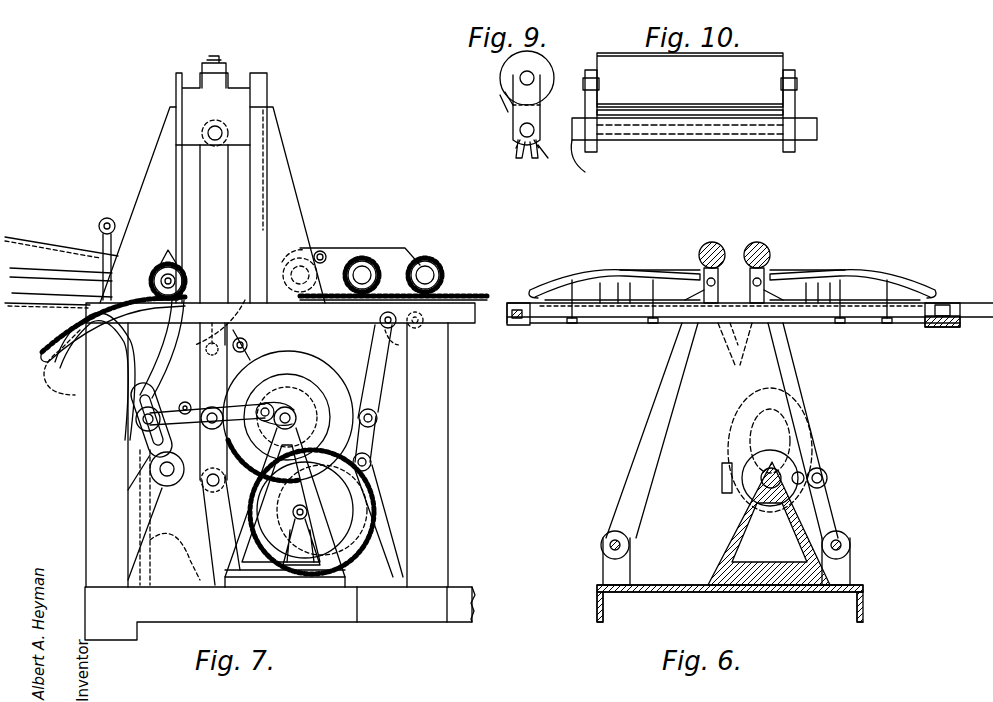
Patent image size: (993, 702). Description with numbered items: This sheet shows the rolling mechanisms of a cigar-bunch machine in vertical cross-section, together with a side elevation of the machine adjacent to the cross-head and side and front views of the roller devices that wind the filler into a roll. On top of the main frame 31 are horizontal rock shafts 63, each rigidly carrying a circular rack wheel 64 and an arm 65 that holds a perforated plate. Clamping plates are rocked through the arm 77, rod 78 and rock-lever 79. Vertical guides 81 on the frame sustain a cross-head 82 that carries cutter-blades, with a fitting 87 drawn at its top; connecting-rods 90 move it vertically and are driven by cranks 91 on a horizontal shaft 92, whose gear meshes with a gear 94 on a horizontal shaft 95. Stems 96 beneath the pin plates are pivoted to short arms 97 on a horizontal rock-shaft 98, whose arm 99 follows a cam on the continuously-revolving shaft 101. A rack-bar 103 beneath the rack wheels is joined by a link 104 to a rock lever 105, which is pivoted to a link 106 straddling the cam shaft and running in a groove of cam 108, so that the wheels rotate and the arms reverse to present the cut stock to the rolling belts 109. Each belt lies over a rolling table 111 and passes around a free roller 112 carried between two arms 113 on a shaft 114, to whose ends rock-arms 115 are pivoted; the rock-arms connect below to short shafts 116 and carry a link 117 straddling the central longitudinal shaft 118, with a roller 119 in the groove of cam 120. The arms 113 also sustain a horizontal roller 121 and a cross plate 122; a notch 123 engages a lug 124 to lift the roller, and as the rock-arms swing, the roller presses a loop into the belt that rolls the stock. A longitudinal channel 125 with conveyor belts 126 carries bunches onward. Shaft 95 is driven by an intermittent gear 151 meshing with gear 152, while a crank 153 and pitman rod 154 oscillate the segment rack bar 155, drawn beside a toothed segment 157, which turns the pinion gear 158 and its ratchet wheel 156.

In FIG. 7, the main frame 31 is at (455, 322).
In FIG. 7, the horizontal rock shaft 63 is at (470, 250).
In FIG. 7, the circular rack wheel 64 is at (452, 245).
In FIG. 7, the arm 65 is at (395, 248).
In FIG. 7, the arm 77 is at (112, 220).
In FIG. 7, the rod 78 is at (100, 242).
In FIG. 7, the rock-lever 79 is at (165, 400).
In FIG. 7, the vertical guides 81 is at (287, 157).
In FIG. 7, the cross-head 82 is at (221, 188).
In FIG. 7, the adjusting screw 87 is at (218, 62).
In FIG. 7, the connecting-rods 90 is at (214, 224).
In FIG. 7, the cranks 91 is at (220, 510).
In FIG. 7, the horizontal shaft 92 is at (205, 482).
In FIG. 7, the gear 94 is at (345, 545).
In FIG. 7, the horizontal shaft 95 is at (295, 505).
In FIG. 7, the stems 96 is at (122, 376).
In FIG. 7, the short arms 97 is at (213, 401).
In FIG. 7, the horizontal rock-shaft 98 is at (248, 345).
In FIG. 7, the arm 99 is at (250, 360).
In FIG. 7, the continuously-revolving horizontal shaft 101 is at (320, 395).
In FIG. 7, the rack-bar 103 is at (478, 290).
In FIG. 7, the link 104 is at (396, 330).
In FIG. 7, the rock lever 105 is at (380, 390).
In FIG. 7, the link 106 is at (378, 425).
In FIG. 7, the cam 108 is at (300, 368).
In FIG. 6, the rolling belts 109 is at (905, 285).
In FIG. 6, the rolling table 111 is at (880, 310).
In FIG. 9, the free roller 112 is at (555, 162).
In FIG. 10, the free roller 112 is at (712, 130).
In FIG. 6, the free roller 112 is at (765, 270).
In FIG. 9, the arms 113 is at (540, 110).
In FIG. 10, the arms 113 is at (795, 108).
In FIG. 6, the arms 113 is at (742, 268).
In FIG. 9, the shaft 114 is at (572, 135).
In FIG. 10, the shaft 114 is at (805, 140).
In FIG. 6, the rock-arms 115 is at (778, 350).
In FIG. 6, the short shafts 116 is at (862, 545).
In FIG. 6, the link 117 is at (725, 448).
In FIG. 6, the central longitudinal shaft 118 is at (760, 480).
In FIG. 6, the roller 119 is at (822, 470).
In FIG. 6, the cam 120 is at (798, 425).
In FIG. 9, the horizontal roller 121 is at (505, 78).
In FIG. 10, the horizontal roller 121 is at (690, 80).
In FIG. 6, the horizontal roller 121 is at (770, 242).
In FIG. 9, the cross plate 122 is at (506, 110).
In FIG. 10, the cross plate 122 is at (660, 98).
In FIG. 9, the notch 123 is at (520, 165).
In FIG. 6, the lug 124 is at (745, 322).
In FIG. 6, the longitudinal channel 125 is at (940, 302).
In FIG. 6, the conveyor belts 126 is at (950, 303).
In FIG. 7, the intermittent gear 151 is at (300, 380).
In FIG. 7, the gear 152 is at (265, 565).
In FIG. 7, the crank 153 is at (306, 399).
In FIG. 7, the pitman rod 154 is at (222, 410).
In FIG. 7, the segment rack bar 155 is at (135, 410).
In FIG. 7, the ratchet wheel 156 is at (160, 262).
In FIG. 7, the toothed segment 157 is at (60, 340).
In FIG. 7, the pinion gear 158 is at (180, 300).